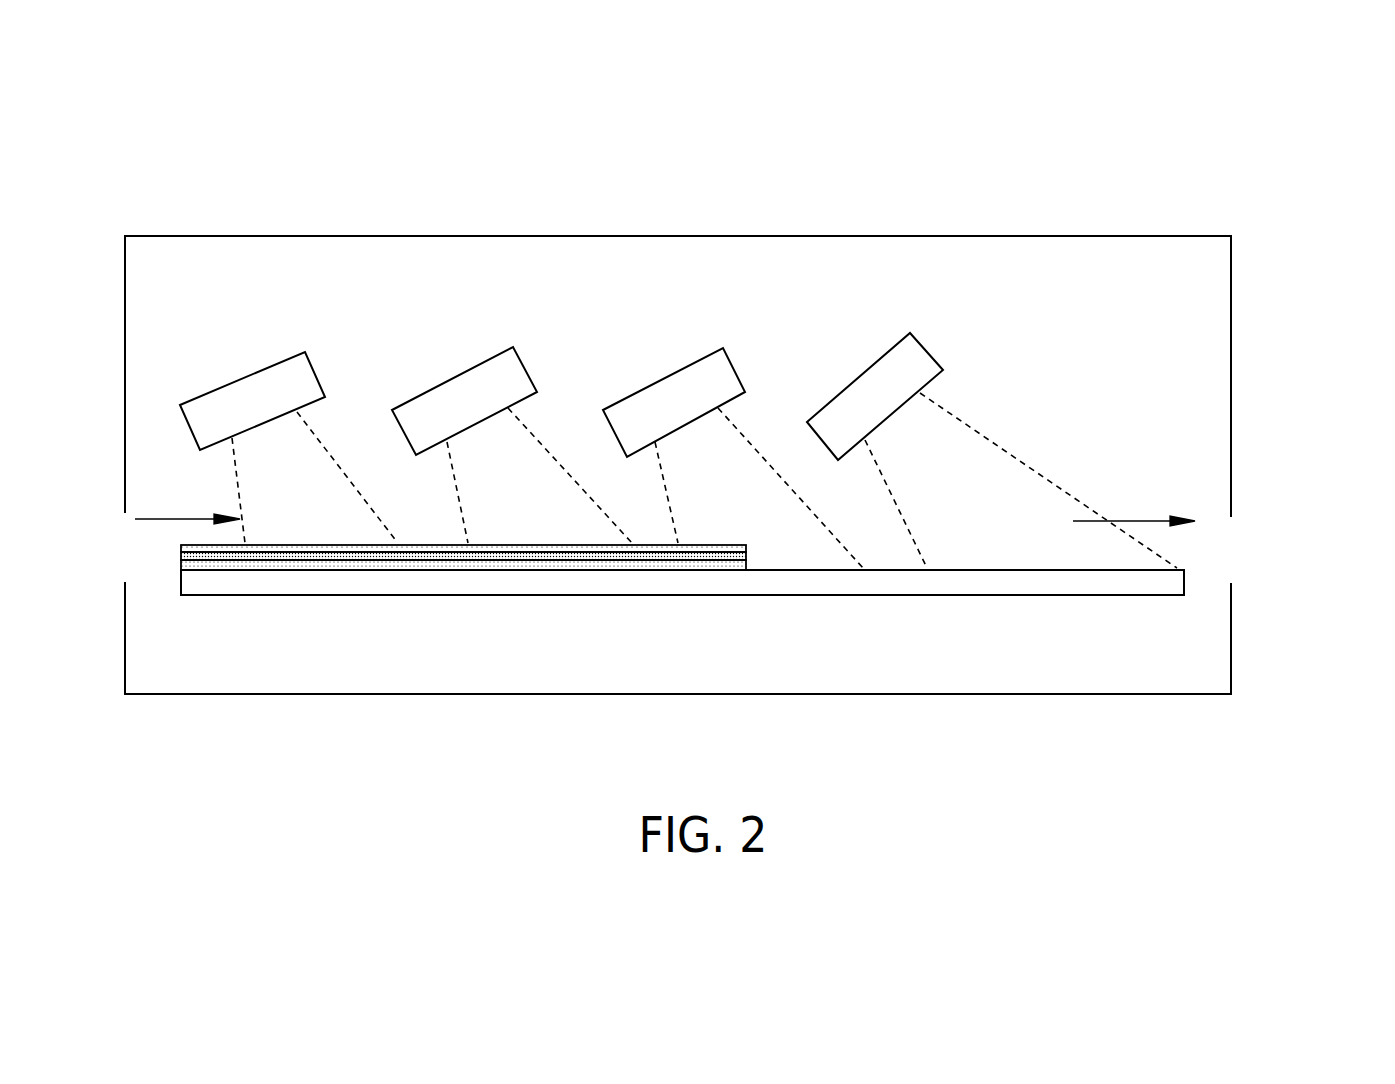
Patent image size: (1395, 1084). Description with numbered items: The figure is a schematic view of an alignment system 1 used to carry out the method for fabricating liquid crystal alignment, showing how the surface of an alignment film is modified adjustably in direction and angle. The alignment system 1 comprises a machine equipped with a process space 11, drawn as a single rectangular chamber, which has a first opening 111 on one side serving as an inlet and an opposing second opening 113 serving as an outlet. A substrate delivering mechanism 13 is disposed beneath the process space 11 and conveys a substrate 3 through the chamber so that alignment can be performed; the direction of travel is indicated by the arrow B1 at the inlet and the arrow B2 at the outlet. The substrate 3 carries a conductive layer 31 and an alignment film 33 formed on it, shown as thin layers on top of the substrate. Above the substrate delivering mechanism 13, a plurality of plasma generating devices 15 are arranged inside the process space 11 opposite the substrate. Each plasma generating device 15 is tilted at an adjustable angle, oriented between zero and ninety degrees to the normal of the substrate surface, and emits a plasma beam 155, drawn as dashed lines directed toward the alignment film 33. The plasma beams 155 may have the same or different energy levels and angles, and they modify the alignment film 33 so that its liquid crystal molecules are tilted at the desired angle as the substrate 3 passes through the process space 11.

The alignment system 1 is at (1121, 197).
The process space 11 is at (1231, 403).
The first opening 111 is at (128, 546).
The second opening 113 is at (1231, 547).
The substrate delivering mechanism 13 is at (1121, 597).
The plasma generating device 15 is at (260, 345).
The plasma beam 155 is at (1000, 447).
The substrate 3 is at (534, 661).
The conductive layer 31 is at (750, 556).
The alignment film 33 is at (747, 547).
The feed direction B1 is at (187, 504).
The exit direction B2 is at (1134, 508).